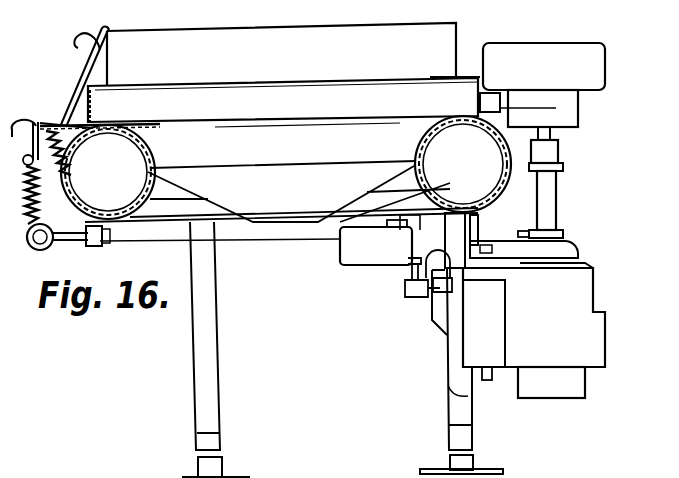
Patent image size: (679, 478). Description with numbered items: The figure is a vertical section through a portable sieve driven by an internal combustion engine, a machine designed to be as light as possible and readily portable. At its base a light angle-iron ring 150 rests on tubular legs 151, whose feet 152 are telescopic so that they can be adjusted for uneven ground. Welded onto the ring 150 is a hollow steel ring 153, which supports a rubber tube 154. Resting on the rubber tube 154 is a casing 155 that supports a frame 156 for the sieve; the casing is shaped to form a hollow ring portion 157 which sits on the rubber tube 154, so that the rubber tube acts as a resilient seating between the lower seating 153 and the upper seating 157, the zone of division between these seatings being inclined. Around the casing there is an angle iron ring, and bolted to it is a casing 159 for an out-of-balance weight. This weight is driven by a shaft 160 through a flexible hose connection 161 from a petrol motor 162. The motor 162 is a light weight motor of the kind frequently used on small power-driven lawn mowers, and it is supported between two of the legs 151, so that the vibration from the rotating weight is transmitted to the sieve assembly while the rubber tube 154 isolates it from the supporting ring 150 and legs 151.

The angle-iron ring 150 is at (160, 238).
The tubular legs 151 is at (213, 407).
The feet 152 is at (222, 476).
The hollow steel ring 153 is at (83, 208).
The rubber tube 154 is at (358, 218).
The casing 155 is at (342, 100).
The frame 156 is at (430, 46).
The hollow ring portion 157 is at (250, 137).
The casing for out-of-balance weight 159 is at (558, 60).
The shaft 160 is at (533, 143).
The flexible hose connection 161 is at (543, 218).
The petrol motor 162 is at (537, 357).